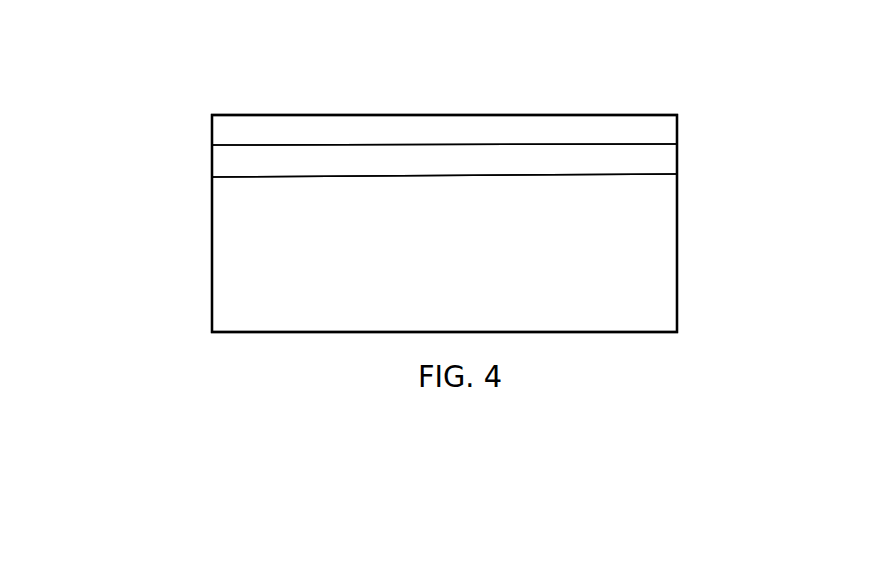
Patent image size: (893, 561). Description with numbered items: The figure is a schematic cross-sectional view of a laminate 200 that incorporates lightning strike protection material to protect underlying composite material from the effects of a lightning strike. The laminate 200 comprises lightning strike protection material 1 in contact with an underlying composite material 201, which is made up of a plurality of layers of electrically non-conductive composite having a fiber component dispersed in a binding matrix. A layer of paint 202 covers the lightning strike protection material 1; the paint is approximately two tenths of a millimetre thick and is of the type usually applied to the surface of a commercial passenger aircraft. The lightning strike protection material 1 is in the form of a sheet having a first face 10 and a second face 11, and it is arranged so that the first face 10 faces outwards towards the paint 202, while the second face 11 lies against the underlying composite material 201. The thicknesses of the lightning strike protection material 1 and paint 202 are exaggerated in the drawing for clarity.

The laminate 200 is at (165, 199).
The layer of paint 202 is at (625, 133).
The lightning strike protection material 1 is at (620, 158).
The underlying composite material 201 is at (613, 278).
The first face 10 is at (250, 134).
The second face 11 is at (258, 185).